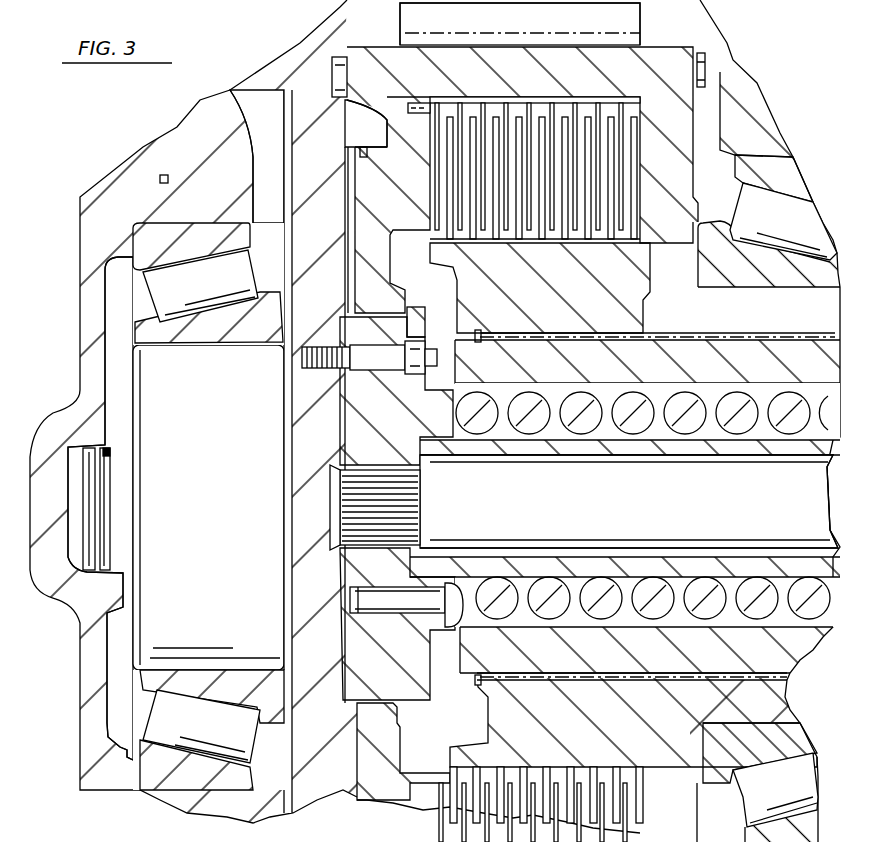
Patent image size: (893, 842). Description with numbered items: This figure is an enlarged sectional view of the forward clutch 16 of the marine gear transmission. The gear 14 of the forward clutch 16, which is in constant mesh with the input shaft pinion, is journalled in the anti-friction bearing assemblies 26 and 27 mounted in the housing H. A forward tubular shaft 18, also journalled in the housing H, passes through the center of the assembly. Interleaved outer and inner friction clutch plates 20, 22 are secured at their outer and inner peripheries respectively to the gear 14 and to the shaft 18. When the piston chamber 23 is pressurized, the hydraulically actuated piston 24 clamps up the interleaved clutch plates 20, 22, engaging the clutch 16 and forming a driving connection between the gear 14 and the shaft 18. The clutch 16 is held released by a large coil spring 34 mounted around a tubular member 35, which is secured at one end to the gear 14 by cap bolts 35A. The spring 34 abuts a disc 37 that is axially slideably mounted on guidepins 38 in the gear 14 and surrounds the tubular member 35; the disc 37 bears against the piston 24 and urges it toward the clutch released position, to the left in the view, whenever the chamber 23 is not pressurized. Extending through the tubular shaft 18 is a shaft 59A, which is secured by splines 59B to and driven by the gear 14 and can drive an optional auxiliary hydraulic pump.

The gear 14 is at (640, 33).
The forward clutch 16 is at (645, 150).
The forward tubular shaft 18 is at (818, 363).
The outer friction clutch plates 20 is at (633, 110).
The inner friction clutch plates 22 is at (635, 237).
The piston chamber 23 is at (352, 150).
The piston 24 is at (360, 180).
The anti-friction bearing assembly 26 is at (158, 722).
The anti-friction bearing assembly 27 is at (803, 217).
The coil spring 34 is at (827, 600).
The tubular member 35 is at (830, 552).
The cap bolts 35A is at (303, 358).
The disc 37 is at (425, 318).
The guidepins 38 is at (358, 600).
The shaft 59A is at (770, 504).
The splines 59B is at (372, 483).
The housing H is at (123, 180).